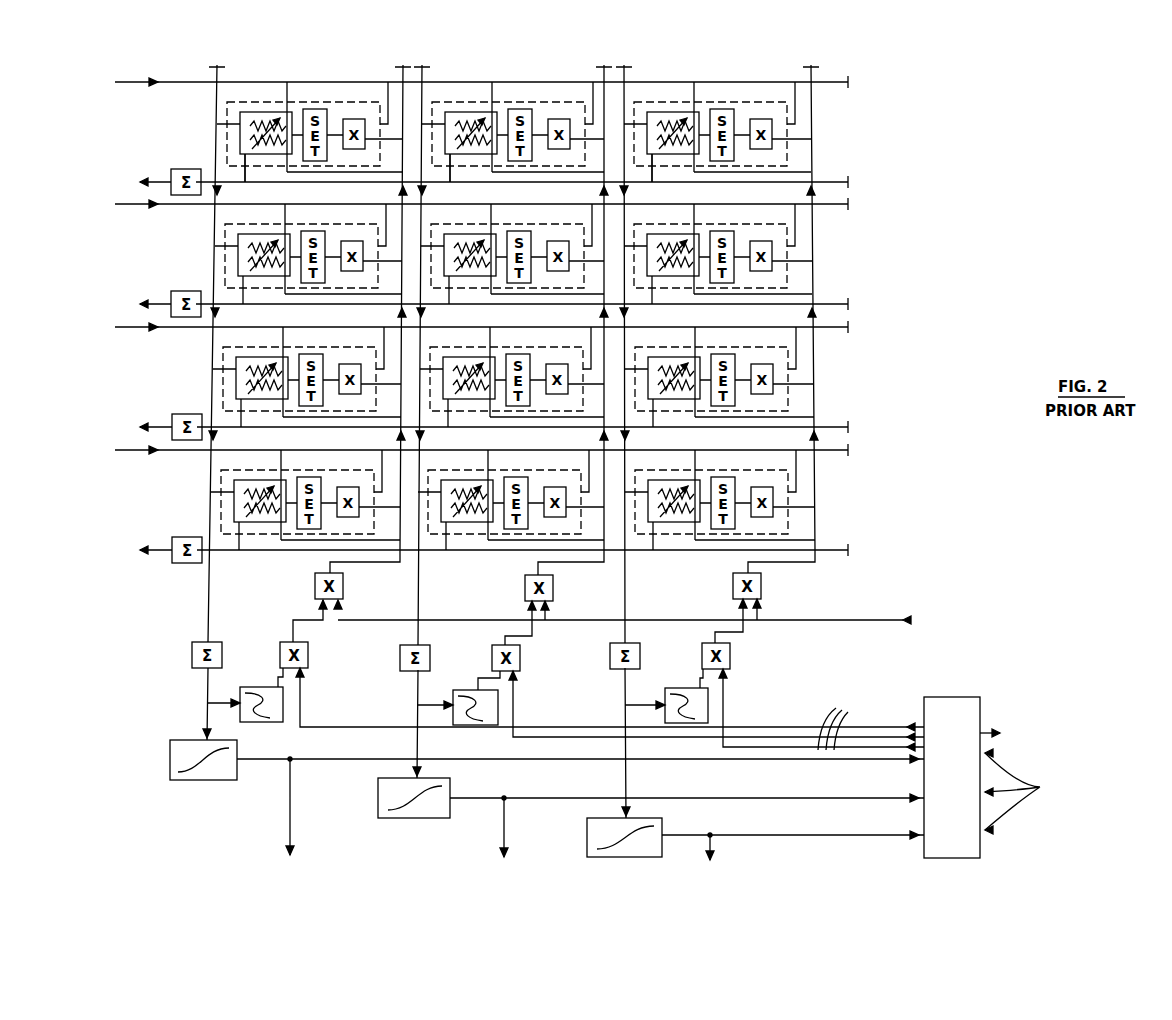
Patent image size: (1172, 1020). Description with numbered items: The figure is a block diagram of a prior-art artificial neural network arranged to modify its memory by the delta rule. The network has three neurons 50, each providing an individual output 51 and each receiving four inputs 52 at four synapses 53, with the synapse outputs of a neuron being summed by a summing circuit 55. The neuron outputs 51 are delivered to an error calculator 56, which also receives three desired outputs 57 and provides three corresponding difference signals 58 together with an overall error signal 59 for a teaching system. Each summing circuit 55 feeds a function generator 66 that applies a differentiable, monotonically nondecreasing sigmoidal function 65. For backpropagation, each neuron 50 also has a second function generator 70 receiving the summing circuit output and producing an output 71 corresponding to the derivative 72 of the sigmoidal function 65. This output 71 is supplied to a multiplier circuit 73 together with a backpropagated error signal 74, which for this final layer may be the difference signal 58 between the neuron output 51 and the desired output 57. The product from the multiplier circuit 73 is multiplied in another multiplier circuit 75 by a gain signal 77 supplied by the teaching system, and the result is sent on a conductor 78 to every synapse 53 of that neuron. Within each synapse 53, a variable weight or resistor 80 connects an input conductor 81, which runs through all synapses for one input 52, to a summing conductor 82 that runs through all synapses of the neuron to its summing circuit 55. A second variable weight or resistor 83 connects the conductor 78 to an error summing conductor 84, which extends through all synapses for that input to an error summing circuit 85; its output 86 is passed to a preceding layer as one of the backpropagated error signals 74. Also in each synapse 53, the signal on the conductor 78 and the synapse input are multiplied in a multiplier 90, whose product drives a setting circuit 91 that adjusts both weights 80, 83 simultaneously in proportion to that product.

The neuron 50 is at (329, 80).
The neuron output 51 is at (292, 858).
The input 52 is at (115, 82).
The synapse 53 is at (380, 100).
The summing circuit 55 is at (192, 655).
The error calculator 56 is at (943, 688).
The desired output 57 is at (1024, 791).
The difference signal 58 is at (844, 725).
The overall error signal 59 is at (1000, 733).
The sigmoidal function 65 is at (203, 780).
The function generator 66 is at (172, 780).
The second function generator 70 is at (263, 722).
The derivative output 71 is at (278, 679).
The derivative 72 is at (244, 690).
The multiplier circuit 73 is at (308, 657).
The backpropagated error signal 74 is at (302, 700).
The multiplier circuit 75 is at (343, 587).
The gain signal 77 is at (903, 620).
The conductor 78 is at (403, 65).
The variable weight 80 is at (266, 112).
The input conductor 81 is at (835, 78).
The summing conductor 82 is at (217, 65).
The variable weight 83 is at (269, 142).
The error summing conductor 84 is at (228, 183).
The error summing circuit 85 is at (183, 169).
The error summing circuit output 86 is at (148, 182).
The multiplier 90 is at (356, 119).
The setting circuit 91 is at (312, 109).